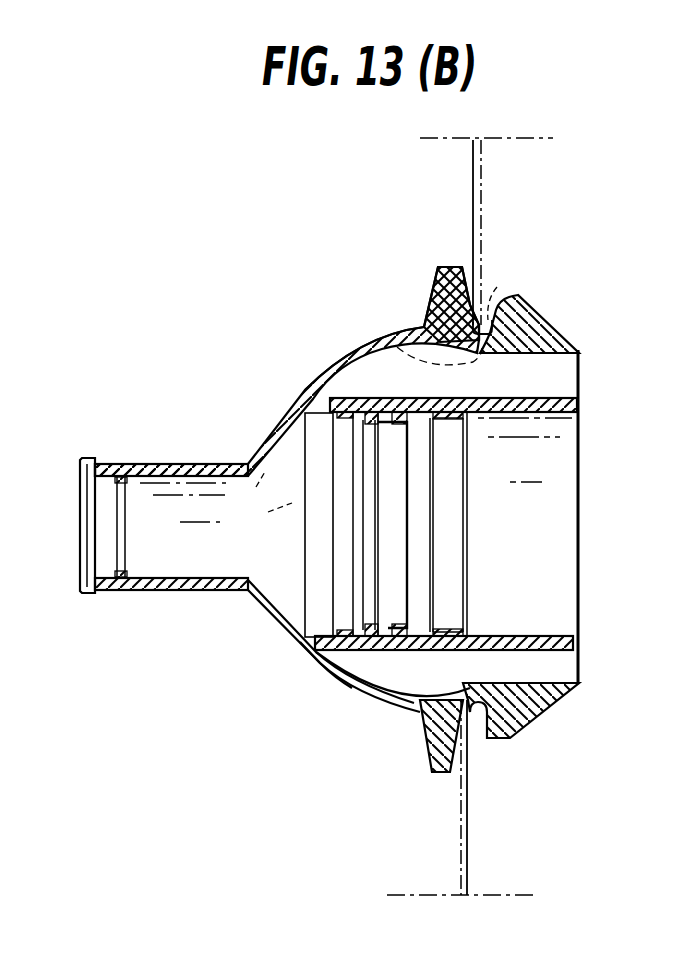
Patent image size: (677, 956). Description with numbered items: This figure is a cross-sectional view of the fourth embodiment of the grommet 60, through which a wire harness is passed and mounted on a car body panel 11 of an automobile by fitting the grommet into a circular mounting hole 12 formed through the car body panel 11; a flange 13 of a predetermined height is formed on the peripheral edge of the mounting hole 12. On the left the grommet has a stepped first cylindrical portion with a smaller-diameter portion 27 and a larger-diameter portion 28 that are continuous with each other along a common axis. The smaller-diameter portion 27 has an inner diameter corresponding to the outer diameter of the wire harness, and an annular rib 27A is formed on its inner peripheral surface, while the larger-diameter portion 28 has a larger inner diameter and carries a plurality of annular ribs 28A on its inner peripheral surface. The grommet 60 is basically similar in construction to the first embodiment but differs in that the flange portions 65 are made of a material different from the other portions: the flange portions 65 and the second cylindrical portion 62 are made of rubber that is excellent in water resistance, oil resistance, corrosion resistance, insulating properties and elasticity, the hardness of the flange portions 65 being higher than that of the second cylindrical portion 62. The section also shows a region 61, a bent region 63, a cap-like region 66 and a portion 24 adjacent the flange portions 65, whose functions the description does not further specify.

The car body panel 11 is at (483, 177).
The mounting hole 12 is at (392, 347).
The flange 13 is at (494, 300).
The lower cap 24 is at (482, 738).
The smaller-diameter portion 27 is at (177, 463).
The annular rib 27A is at (118, 518).
The larger-diameter portion 28 is at (545, 395).
The annular ribs 28A is at (343, 512).
The grommet 60 is at (280, 347).
The small-diameter portion 61 is at (148, 593).
The second cylindrical portion 62 is at (378, 707).
The bent portion 63 is at (320, 675).
The flange portions 65 is at (442, 267).
The cap 66 is at (538, 317).